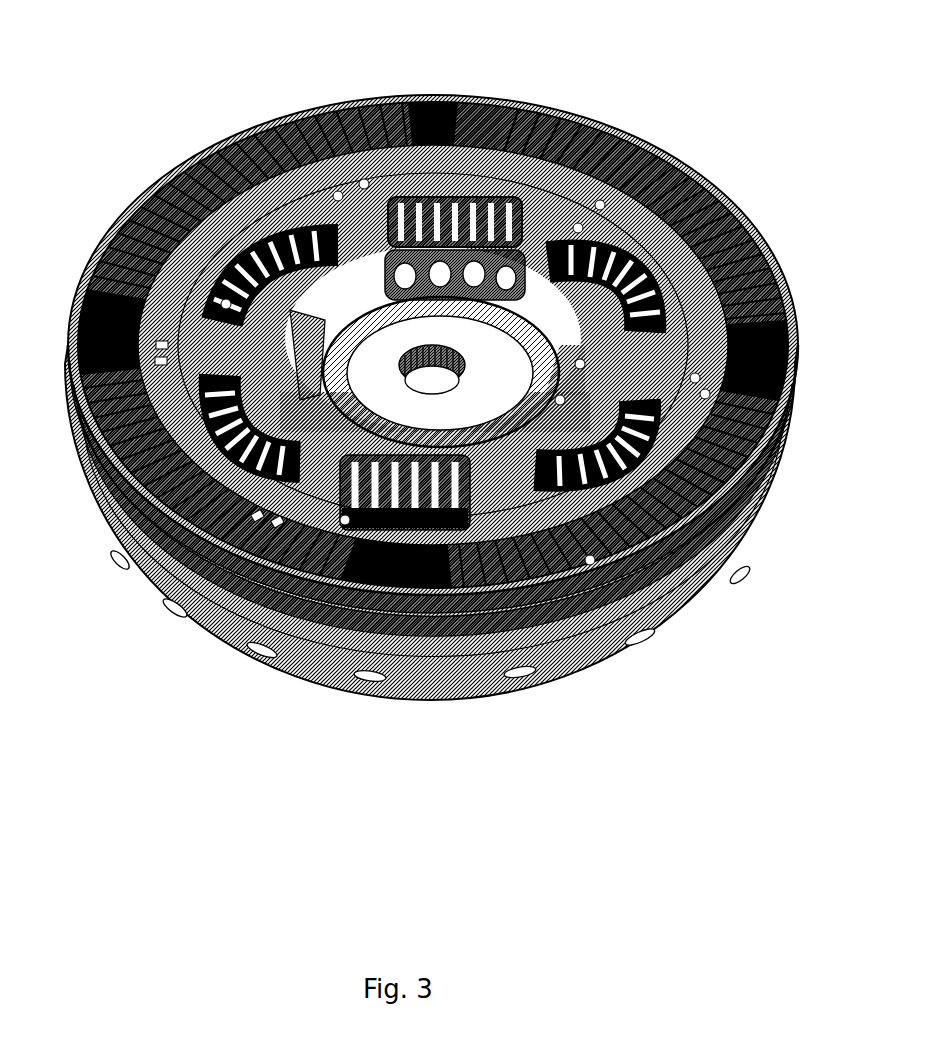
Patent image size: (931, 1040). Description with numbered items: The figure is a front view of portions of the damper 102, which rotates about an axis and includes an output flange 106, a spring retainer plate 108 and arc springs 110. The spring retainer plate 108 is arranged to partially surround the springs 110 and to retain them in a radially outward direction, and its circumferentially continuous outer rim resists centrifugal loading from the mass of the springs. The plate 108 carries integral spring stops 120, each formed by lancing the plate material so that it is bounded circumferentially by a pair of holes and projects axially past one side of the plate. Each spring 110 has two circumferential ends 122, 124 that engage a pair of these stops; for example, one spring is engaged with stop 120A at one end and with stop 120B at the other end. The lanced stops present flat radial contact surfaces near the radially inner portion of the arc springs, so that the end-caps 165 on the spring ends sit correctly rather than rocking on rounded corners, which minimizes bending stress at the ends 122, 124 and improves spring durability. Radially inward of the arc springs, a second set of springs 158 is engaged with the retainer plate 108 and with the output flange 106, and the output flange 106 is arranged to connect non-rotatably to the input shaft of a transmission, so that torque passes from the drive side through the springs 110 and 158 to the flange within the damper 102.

The damper 102 is at (622, 68).
The output flange 106 is at (470, 403).
The spring retainer plate 108 is at (757, 230).
The springs 110 is at (357, 105).
The spring stop 120 is at (105, 344).
The spring stop 120A is at (462, 134).
The spring stop 120B is at (752, 367).
The circumferential end 122 is at (520, 110).
The circumferential end 124 is at (772, 320).
The springs 158 is at (262, 278).
The end-caps 165 is at (419, 105).